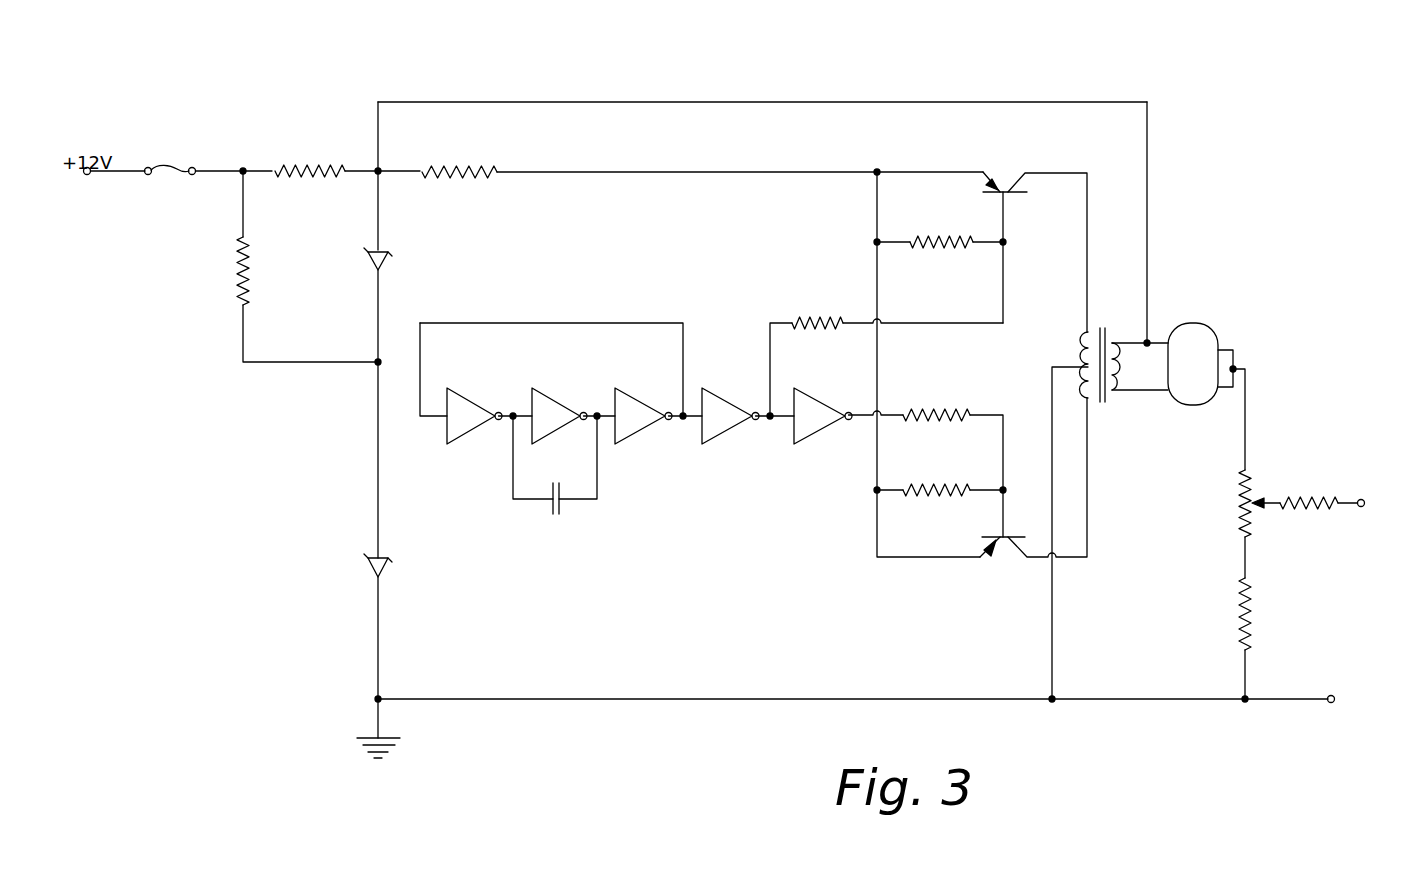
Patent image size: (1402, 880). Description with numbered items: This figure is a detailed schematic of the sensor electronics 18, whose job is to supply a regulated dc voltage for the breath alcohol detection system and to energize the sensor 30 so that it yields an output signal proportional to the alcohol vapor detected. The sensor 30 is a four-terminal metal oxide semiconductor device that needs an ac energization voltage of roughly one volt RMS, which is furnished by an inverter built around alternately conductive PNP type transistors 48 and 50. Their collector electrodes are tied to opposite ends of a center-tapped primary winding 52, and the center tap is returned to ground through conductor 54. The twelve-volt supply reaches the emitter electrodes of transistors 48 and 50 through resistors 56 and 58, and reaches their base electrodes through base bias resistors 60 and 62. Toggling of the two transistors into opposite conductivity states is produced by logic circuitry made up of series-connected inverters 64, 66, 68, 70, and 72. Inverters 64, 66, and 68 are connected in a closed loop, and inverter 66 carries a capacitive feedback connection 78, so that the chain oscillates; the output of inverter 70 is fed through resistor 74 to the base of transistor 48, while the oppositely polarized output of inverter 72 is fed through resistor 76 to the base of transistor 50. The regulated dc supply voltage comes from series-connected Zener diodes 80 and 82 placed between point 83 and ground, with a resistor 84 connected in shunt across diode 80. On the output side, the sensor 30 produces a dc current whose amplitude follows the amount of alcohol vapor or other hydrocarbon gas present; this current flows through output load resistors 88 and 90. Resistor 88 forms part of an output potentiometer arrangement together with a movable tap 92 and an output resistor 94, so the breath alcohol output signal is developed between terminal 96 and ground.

The sensor electronics 18 is at (928, 100).
The sensor 30 is at (1200, 333).
The PNP type transistor 48 is at (1017, 194).
The PNP type transistor 50 is at (1008, 540).
The center-tapped primary winding 52 is at (1080, 356).
The conductor 54 is at (1052, 652).
The resistor 56 is at (485, 167).
The resistor 58 is at (305, 163).
The base bias resistor 60 is at (927, 246).
The base bias resistor 62 is at (928, 493).
The inverter 64 is at (466, 437).
The inverter 66 is at (553, 412).
The inverter 68 is at (640, 420).
The inverter 70 is at (717, 403).
The inverter 72 is at (805, 430).
The resistor 74 is at (812, 318).
The resistor 76 is at (918, 412).
The capacitive feedback connection 78 is at (561, 508).
The Zener diode 80 is at (388, 262).
The Zener diode 82 is at (384, 572).
The point 83 is at (380, 174).
The resistor 84 is at (243, 288).
The output load resistor 88 is at (1240, 497).
The output load resistor 90 is at (1250, 622).
The movable tap 92 is at (1262, 498).
The output resistor 94 is at (1300, 508).
The terminal 96 is at (1358, 507).